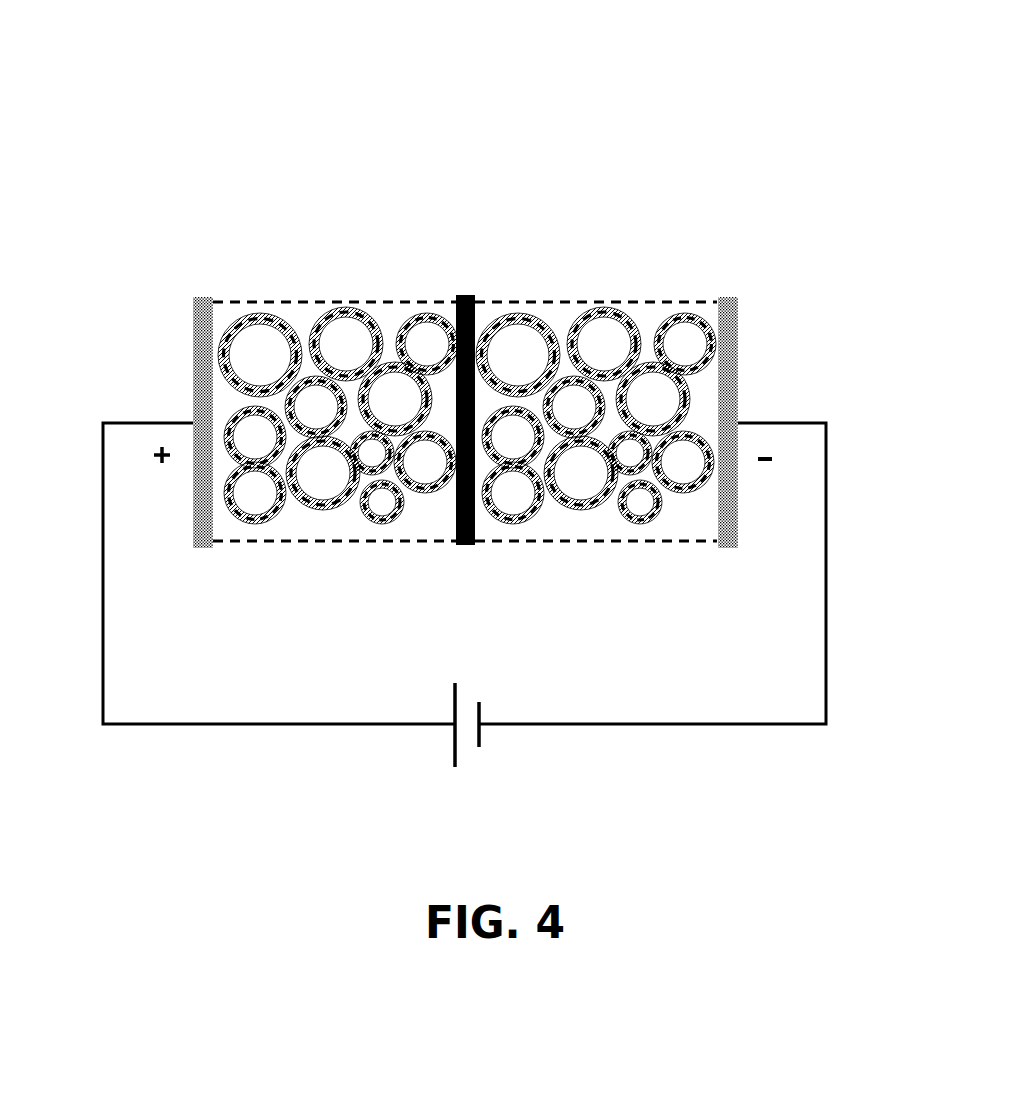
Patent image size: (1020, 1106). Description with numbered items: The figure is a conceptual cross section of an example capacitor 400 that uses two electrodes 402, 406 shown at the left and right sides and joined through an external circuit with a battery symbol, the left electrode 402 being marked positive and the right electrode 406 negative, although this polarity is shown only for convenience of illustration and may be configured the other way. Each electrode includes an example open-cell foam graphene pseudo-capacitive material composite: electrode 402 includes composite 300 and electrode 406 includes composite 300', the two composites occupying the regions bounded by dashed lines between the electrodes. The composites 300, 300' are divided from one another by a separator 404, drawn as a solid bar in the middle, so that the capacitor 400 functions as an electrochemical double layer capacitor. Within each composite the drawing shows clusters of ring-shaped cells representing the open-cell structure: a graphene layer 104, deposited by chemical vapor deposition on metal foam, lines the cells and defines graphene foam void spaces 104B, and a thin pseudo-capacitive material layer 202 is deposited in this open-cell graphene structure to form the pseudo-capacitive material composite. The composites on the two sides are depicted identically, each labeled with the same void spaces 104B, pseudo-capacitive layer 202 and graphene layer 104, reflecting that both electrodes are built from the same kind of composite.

The capacitor 400 is at (387, 98).
The open-cell foam graphene pseudo-capacitive material composite 300 is at (328, 370).
The open-cell foam graphene pseudo-capacitive material composite 300' is at (594, 370).
The electrode 402 is at (193, 375).
The electrode 406 is at (738, 382).
The separator 404 is at (465, 298).
The graphene foam void spaces 104B is at (288, 368).
The pseudo-capacitive material layer 202 is at (250, 517).
The graphene layer 104 is at (383, 520).